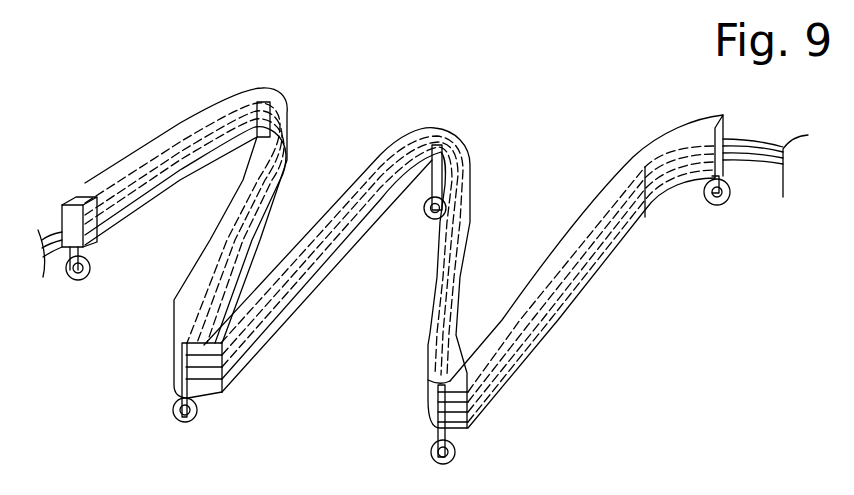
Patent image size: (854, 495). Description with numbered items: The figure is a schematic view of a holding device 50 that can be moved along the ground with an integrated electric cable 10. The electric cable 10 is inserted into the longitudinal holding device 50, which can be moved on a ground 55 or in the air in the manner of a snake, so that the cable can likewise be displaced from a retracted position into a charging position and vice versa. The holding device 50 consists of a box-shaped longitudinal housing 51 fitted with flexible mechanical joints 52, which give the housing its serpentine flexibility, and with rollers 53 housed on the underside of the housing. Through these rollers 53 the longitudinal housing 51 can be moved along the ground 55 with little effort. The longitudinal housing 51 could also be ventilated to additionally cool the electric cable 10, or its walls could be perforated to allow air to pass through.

The electric cable 10 is at (194, 131).
The holding device 50 is at (437, 120).
The longitudinal housing 51 is at (478, 211).
The flexible mechanical joints 52 is at (478, 403).
The rollers 53 is at (443, 450).
The ground 55 is at (668, 212).